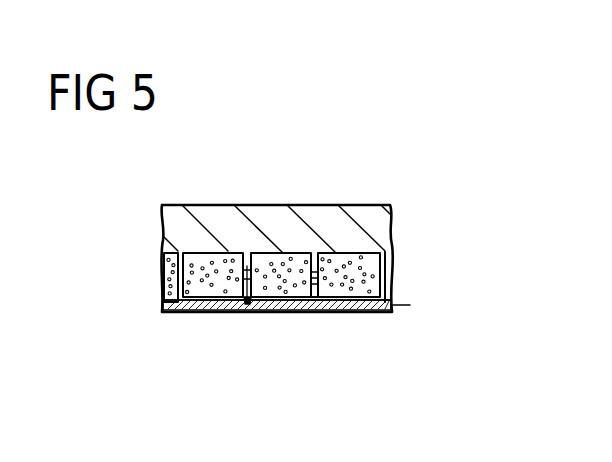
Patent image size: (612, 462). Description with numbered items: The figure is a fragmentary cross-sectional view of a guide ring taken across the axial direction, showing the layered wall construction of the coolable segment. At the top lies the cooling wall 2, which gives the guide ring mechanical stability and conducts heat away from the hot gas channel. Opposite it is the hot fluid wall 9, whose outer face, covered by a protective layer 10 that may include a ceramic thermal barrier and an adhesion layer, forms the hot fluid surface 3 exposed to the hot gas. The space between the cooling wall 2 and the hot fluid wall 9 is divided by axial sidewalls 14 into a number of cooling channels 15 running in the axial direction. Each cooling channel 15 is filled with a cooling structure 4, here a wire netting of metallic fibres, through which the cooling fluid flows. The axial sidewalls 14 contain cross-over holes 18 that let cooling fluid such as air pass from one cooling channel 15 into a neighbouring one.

The cooling wall 2 is at (362, 218).
The cooling structure 4 is at (347, 258).
The cooling channels 15 is at (193, 275).
The hot fluid wall 9 is at (165, 300).
The hot fluid surface 3 is at (367, 308).
The protective layer 10 is at (410, 305).
The axial sidewalls 14 is at (248, 304).
The cross-over holes 18 is at (338, 283).